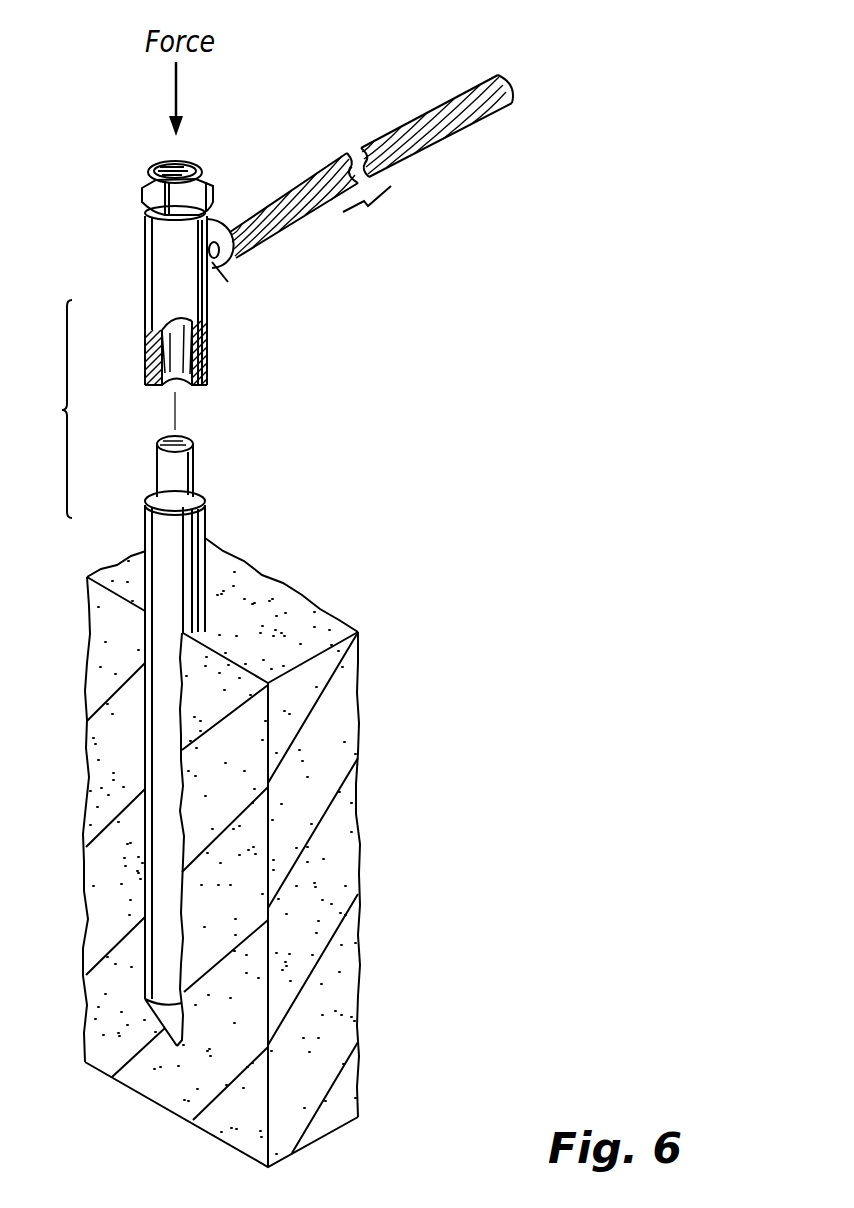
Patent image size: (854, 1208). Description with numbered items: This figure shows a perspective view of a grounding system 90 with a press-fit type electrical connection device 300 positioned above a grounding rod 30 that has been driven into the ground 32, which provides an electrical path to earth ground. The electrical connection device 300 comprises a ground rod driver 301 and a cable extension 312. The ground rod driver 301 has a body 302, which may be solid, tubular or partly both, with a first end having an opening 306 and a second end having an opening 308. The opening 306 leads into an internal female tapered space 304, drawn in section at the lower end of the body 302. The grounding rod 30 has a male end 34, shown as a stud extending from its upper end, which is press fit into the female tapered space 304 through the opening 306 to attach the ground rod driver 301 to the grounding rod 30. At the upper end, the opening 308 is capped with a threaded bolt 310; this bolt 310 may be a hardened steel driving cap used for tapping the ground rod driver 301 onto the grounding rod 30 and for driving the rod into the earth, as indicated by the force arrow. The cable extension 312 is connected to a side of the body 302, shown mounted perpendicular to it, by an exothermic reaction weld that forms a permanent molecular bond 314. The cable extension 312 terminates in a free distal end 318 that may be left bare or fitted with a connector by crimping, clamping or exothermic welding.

The electrical connection device 300 is at (278, 142).
The distal end of the cable extension 318 is at (489, 78).
The cable extension 312 is at (375, 222).
The threaded bolt 310 is at (203, 178).
The opening at second end 308 is at (133, 206).
The body 302 is at (160, 282).
The permanent molecular bond 314 is at (222, 264).
The internal female tapered space 304 is at (160, 349).
The ground rod driver 301 is at (218, 328).
The opening at first end 306 is at (188, 391).
The grounding system 90 is at (52, 404).
The male end 34 is at (157, 480).
The grounding rod 30 is at (157, 545).
The ground 32 is at (301, 618).